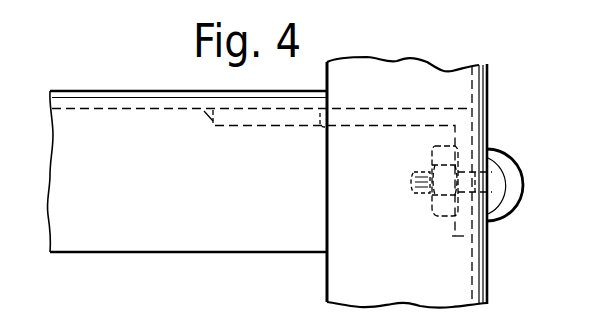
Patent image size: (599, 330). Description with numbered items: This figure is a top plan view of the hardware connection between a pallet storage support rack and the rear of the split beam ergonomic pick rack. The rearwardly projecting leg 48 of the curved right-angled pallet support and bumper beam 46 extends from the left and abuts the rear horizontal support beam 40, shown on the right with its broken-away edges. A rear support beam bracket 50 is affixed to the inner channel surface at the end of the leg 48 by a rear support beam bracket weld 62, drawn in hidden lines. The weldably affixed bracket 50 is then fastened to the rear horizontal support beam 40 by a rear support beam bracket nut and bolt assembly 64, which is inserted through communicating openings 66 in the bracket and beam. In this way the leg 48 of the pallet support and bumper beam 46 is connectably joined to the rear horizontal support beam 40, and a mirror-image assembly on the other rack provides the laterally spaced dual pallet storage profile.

The rear horizontal support beam 40 is at (488, 87).
The curved right-angled pallet support and bumper beam 46 is at (82, 90).
The rearwardly projecting leg 48 is at (157, 253).
The rear support beam bracket 50 is at (470, 126).
The rear support beam bracket weld 62 is at (207, 118).
The rear support beam bracket nut and bolt assembly 64 is at (504, 190).
The communicating openings 66 is at (485, 150).